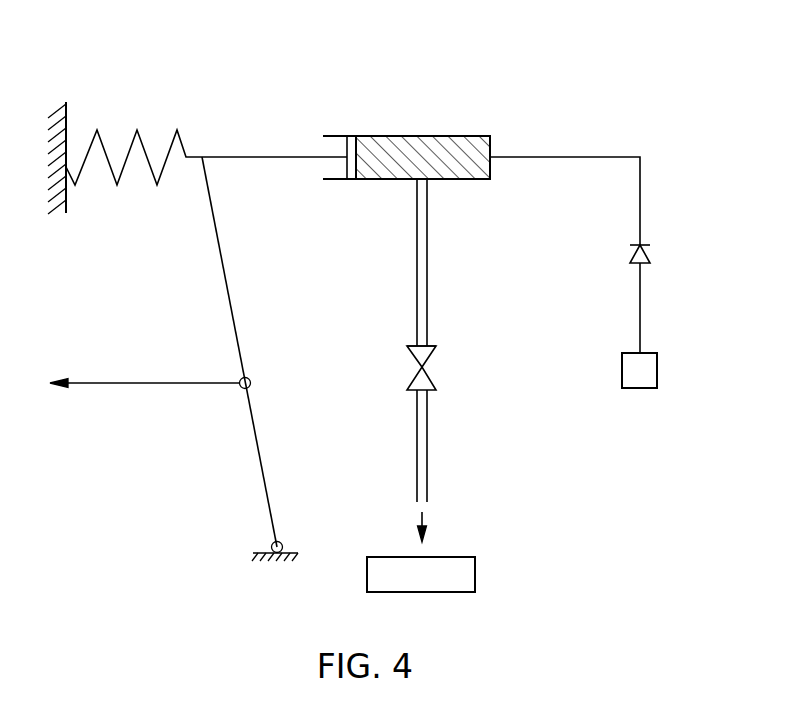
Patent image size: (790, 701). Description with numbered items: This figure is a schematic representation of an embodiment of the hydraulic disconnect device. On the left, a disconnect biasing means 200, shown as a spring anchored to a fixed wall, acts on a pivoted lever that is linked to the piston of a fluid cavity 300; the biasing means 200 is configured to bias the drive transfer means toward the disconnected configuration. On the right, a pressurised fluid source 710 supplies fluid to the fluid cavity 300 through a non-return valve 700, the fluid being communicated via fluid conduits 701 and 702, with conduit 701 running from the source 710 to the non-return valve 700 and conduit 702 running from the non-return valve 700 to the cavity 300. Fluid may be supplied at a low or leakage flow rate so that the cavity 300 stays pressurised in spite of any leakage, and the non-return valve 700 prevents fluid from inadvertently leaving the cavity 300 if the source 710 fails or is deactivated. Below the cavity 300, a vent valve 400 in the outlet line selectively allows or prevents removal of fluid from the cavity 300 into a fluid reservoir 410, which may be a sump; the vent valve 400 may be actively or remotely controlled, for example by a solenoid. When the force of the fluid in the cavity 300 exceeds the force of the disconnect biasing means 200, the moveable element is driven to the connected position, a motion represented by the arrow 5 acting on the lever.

The arrow 5 is at (157, 382).
The disconnect biasing means 200 is at (144, 131).
The fluid cavity 300 is at (388, 145).
The vent valve 400 is at (430, 381).
The fluid reservoir 410 is at (475, 575).
The non-return valve 700 is at (647, 240).
The fluid conduit 701 is at (639, 300).
The fluid conduit 702 is at (540, 157).
The pressurised fluid source 710 is at (650, 352).